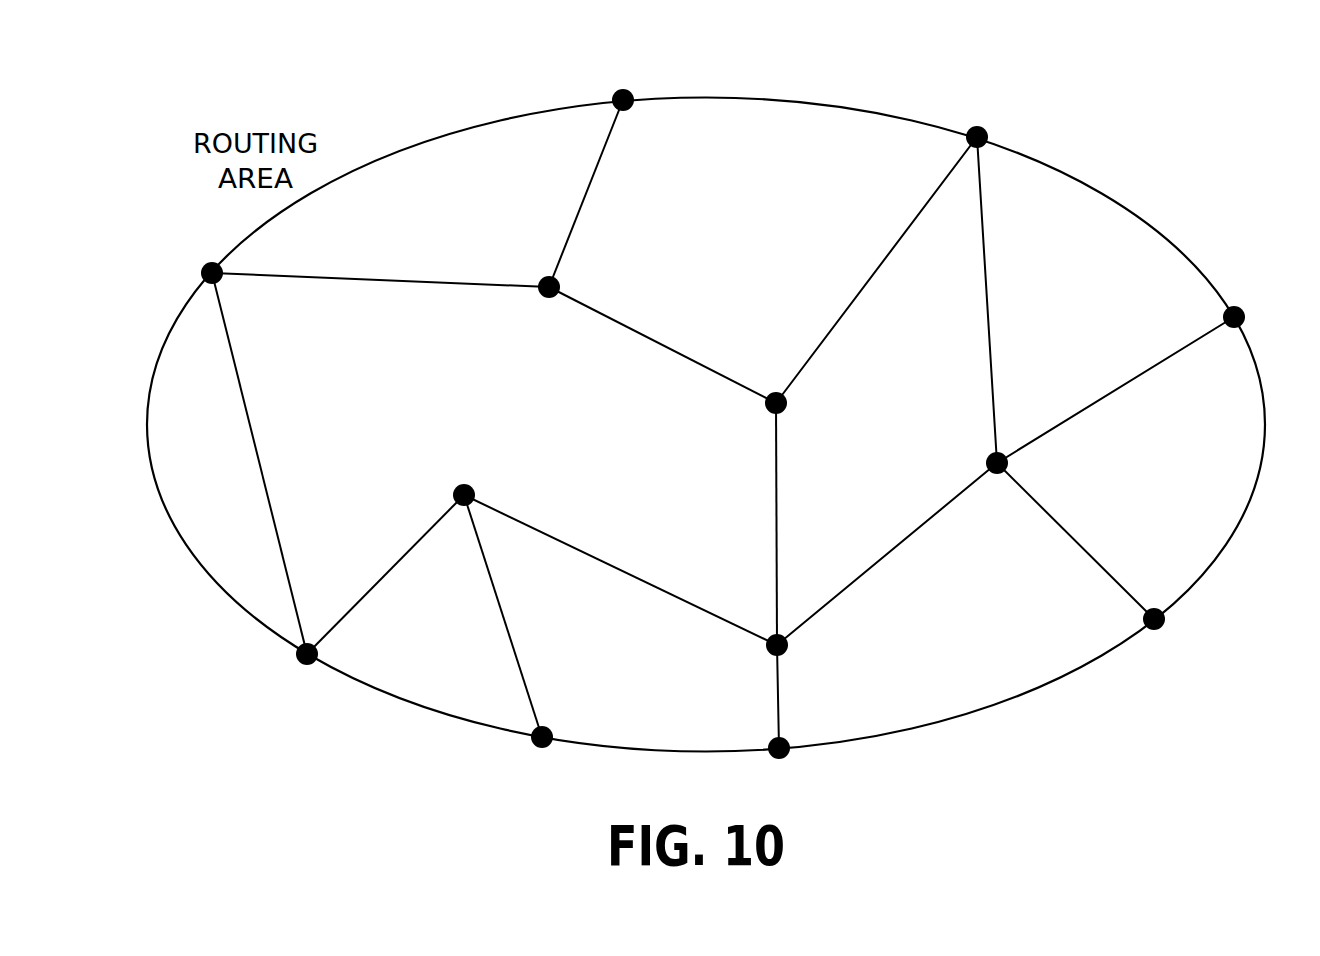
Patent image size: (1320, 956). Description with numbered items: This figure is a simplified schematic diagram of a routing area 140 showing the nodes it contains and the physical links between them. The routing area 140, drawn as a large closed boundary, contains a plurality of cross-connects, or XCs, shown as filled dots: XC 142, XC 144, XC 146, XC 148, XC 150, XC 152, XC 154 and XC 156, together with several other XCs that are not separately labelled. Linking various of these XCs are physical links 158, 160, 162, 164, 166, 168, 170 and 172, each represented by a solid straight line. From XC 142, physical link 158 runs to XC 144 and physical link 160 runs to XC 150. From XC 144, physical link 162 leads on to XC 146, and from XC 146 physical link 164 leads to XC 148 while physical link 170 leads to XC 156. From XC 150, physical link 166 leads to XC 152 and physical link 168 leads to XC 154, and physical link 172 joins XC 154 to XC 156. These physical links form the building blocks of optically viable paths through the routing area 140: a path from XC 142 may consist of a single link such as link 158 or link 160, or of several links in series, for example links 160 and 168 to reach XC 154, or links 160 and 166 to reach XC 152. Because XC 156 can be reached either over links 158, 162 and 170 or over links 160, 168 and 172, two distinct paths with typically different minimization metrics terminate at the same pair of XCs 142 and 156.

The routing area 140 is at (1107, 193).
The XC 142 is at (200, 272).
The XC 144 is at (300, 668).
The XC 146 is at (467, 482).
The XC 148 is at (537, 748).
The XC 150 is at (557, 278).
The XC 152 is at (630, 92).
The XC 154 is at (783, 410).
The XC 156 is at (785, 652).
The physical link 158 is at (262, 465).
The physical link 160 is at (450, 280).
The physical link 162 is at (352, 610).
The physical link 164 is at (515, 655).
The physical link 166 is at (600, 160).
The physical link 168 is at (665, 340).
The physical link 170 is at (587, 550).
The physical link 172 is at (778, 502).